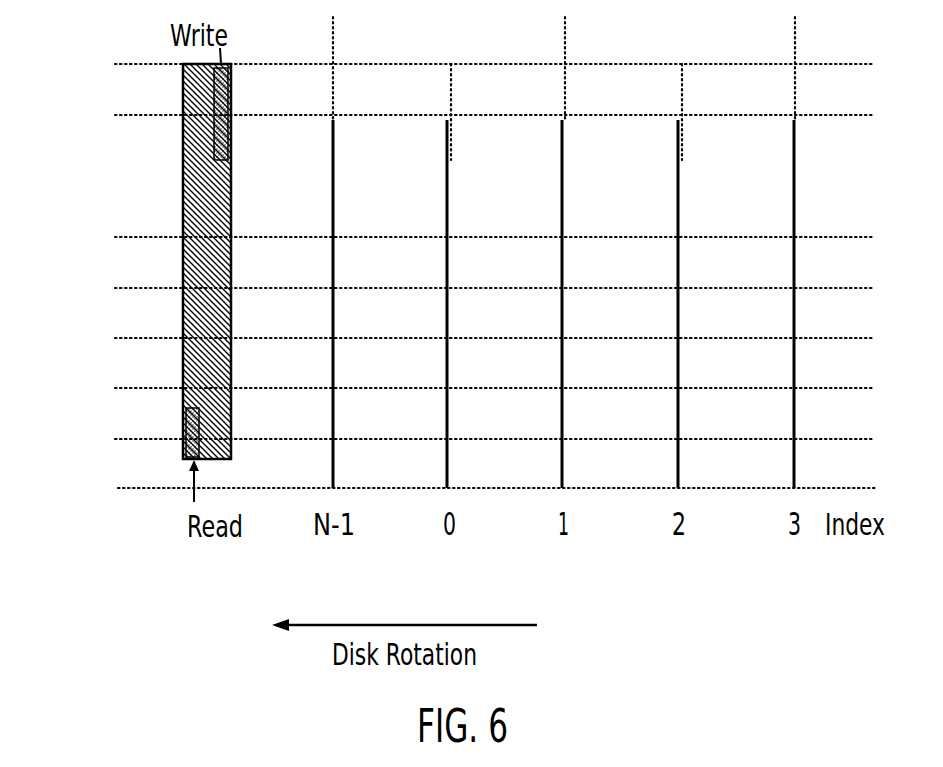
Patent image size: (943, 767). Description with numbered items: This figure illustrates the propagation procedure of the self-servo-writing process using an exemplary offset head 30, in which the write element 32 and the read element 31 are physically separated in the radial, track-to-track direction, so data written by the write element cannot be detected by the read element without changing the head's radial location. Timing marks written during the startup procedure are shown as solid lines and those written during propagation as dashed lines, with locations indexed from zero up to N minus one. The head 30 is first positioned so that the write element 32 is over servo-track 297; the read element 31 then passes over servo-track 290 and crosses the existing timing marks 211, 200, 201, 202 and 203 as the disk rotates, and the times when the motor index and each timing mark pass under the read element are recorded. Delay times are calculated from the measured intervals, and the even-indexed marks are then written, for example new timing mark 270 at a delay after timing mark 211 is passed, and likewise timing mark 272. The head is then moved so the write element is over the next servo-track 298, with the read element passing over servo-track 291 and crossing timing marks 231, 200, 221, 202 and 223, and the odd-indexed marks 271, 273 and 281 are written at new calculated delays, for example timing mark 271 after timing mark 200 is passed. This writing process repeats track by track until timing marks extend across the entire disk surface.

The offset head 30 is at (182, 205).
The read element 31 is at (176, 450).
The write element 32 is at (230, 137).
The servo-track 298 is at (115, 65).
The servo-track 297 is at (115, 116).
The servo-track 291 is at (115, 388).
The servo-track 290 is at (115, 440).
The timing mark 281 is at (333, 45).
The timing mark 270 is at (450, 100).
The timing mark 271 is at (565, 45).
The timing mark 272 is at (682, 100).
The timing mark 273 is at (795, 45).
The timing mark 231 is at (333, 370).
The timing mark 221 is at (562, 370).
The timing mark 223 is at (794, 368).
The timing mark 200 is at (447, 420).
The timing mark 202 is at (678, 420).
The timing mark 211 is at (333, 472).
The timing mark 201 is at (562, 472).
The timing mark 203 is at (794, 470).